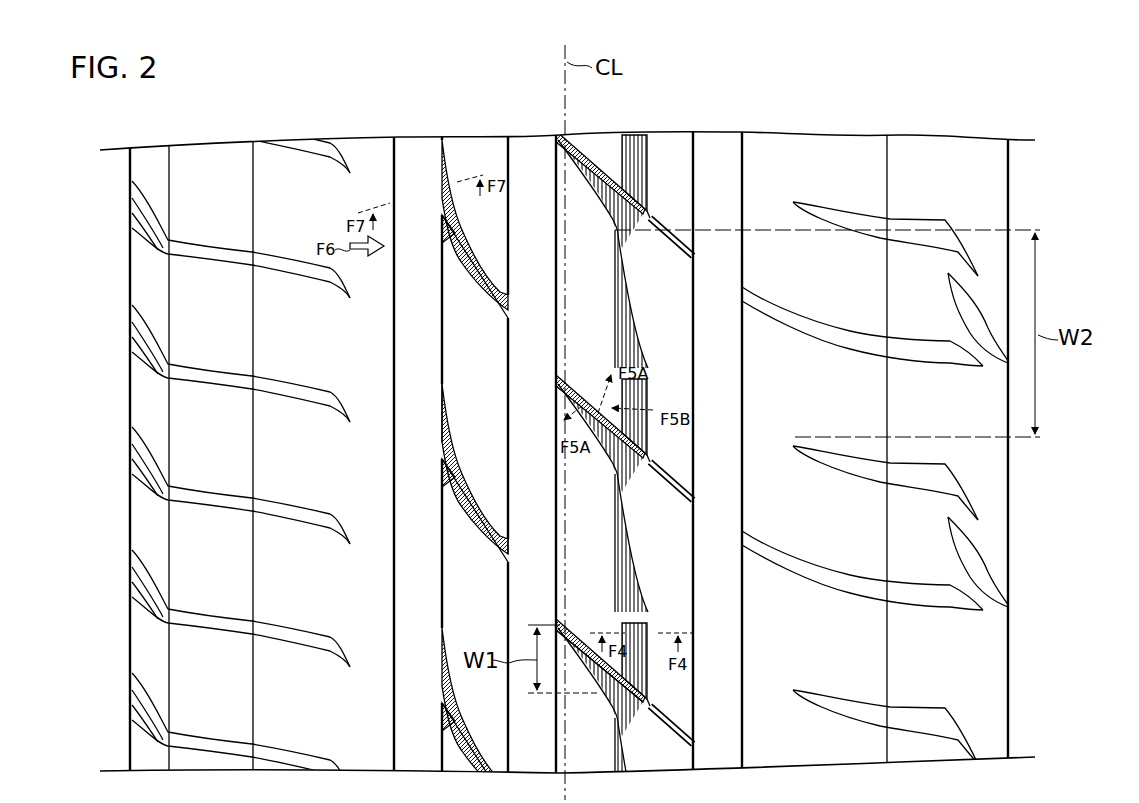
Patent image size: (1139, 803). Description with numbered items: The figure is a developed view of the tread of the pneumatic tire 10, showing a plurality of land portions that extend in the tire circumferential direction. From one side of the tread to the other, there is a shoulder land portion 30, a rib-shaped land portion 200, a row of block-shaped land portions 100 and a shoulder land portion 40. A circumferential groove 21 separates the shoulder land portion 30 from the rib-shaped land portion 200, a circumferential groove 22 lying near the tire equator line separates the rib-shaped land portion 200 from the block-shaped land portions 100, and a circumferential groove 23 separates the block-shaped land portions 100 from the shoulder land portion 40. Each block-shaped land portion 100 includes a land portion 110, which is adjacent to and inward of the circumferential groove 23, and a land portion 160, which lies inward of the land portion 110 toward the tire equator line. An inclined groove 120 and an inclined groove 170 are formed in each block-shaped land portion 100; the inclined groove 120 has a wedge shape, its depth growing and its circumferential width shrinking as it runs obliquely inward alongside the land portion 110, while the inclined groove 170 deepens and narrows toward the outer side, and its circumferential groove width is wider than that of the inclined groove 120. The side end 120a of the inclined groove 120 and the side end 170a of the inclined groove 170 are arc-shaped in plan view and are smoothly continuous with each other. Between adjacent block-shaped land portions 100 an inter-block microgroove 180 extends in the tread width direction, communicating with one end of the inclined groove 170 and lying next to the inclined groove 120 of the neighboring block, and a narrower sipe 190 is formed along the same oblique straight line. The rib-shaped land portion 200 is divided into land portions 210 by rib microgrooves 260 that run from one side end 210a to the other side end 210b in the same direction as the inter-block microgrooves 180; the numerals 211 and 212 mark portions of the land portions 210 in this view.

The pneumatic tire 10 is at (1062, 86).
The circumferential groove 21 is at (412, 122).
The circumferential groove 22 is at (529, 122).
The circumferential groove 23 is at (717, 122).
The shoulder land portion 30 is at (249, 117).
The shoulder land portion 40 is at (881, 113).
The block-shaped land portion 100 is at (684, 435).
The land portion 110 is at (678, 590).
The inclined groove 120 is at (678, 493).
The side end 120a is at (600, 446).
The land portion 160 is at (596, 603).
The inclined groove 170 is at (684, 657).
The side end 170a is at (653, 620).
The inter-block microgroove 180 is at (615, 410).
The sipe 190 is at (675, 480).
The rib-shaped land portion 200 is at (471, 435).
The land portion 210 is at (471, 469).
The side end 210a is at (442, 364).
The side end 210b is at (508, 403).
The first groove portion 211 is at (442, 240).
The second groove portion 212 is at (442, 437).
The rib microgroove 260 is at (473, 507).